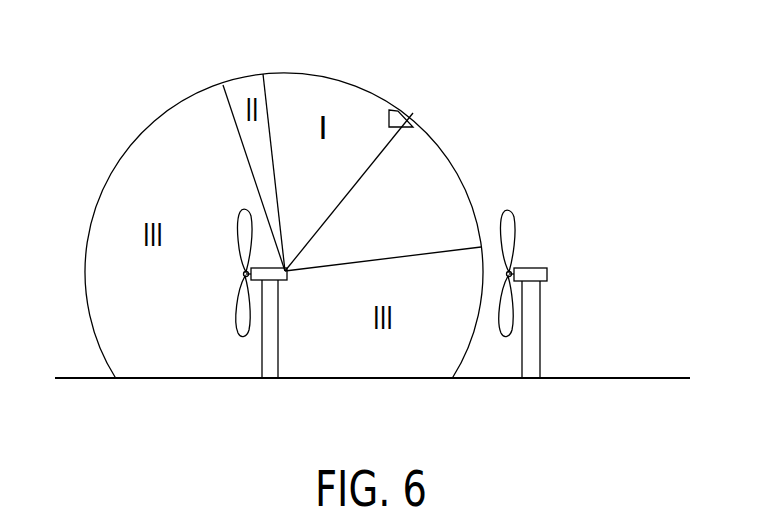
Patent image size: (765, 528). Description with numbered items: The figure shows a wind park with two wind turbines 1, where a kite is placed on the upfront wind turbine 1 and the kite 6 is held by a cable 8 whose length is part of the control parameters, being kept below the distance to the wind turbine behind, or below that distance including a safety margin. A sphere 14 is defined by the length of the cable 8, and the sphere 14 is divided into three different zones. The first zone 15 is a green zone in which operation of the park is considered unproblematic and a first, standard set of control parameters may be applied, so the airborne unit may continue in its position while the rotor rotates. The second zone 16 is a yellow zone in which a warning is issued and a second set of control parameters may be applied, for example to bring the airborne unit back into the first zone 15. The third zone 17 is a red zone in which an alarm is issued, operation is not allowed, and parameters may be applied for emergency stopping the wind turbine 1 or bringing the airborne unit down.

The wind turbine 1 is at (222, 331).
The sensor device 6 is at (407, 115).
The line of sight 8 is at (352, 188).
The sphere 14 is at (468, 193).
The zone I 15 is at (337, 80).
The zone II 16 is at (242, 82).
The zone III 17 is at (432, 367).